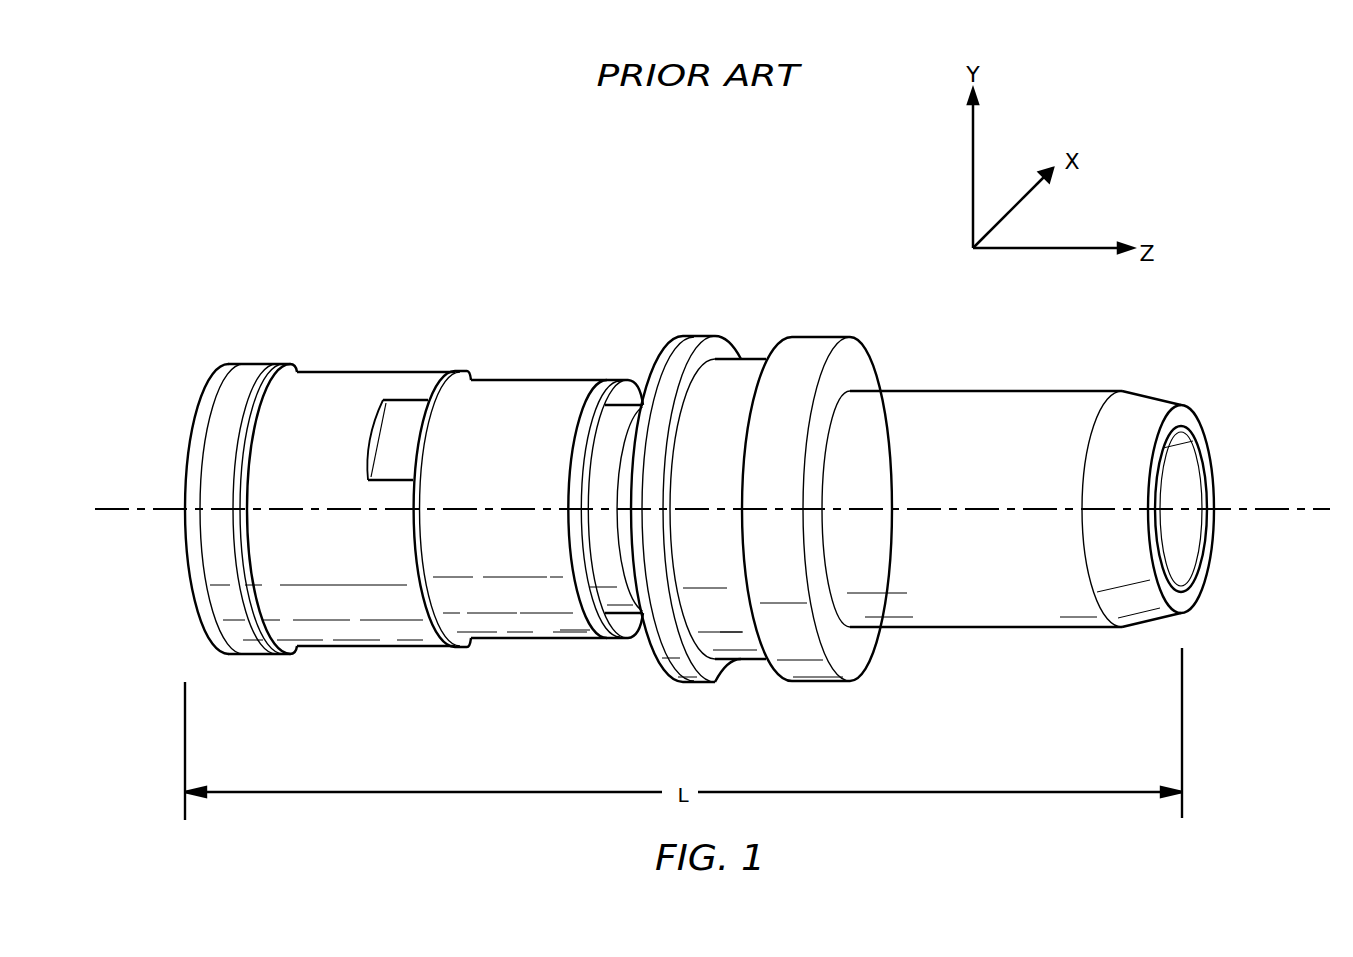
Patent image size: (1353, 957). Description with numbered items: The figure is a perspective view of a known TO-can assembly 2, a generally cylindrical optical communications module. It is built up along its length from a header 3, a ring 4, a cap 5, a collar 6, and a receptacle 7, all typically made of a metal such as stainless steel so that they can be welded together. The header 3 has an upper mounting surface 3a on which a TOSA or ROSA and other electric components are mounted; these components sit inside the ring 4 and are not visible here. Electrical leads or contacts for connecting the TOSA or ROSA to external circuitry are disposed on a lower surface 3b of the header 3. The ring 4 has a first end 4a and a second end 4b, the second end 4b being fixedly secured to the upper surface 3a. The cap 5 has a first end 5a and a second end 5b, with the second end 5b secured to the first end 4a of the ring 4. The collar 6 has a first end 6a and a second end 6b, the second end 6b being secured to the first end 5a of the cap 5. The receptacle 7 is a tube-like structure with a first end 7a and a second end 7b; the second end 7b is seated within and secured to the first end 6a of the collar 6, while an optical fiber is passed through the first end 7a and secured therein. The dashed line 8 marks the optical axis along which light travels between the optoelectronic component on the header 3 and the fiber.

The TO-can assembly 2 is at (594, 296).
The header 3 is at (207, 393).
The upper mounting surface 3a is at (212, 484).
The lower surface 3b is at (197, 604).
The ring 4 is at (263, 657).
The first end of the ring 4a is at (246, 420).
The second end of the ring 4b is at (223, 373).
The cap 5 is at (345, 380).
The first end of the cap 5a is at (452, 388).
The second end of the cap 5b is at (253, 633).
The collar 6 is at (552, 380).
The first end of the collar 6a is at (608, 394).
The second end of the collar 6b is at (440, 628).
The receptacle 7 is at (820, 345).
The first end of the receptacle 7a is at (1177, 418).
The second end of the receptacle 7b is at (593, 587).
The optical axis 8 is at (1261, 511).